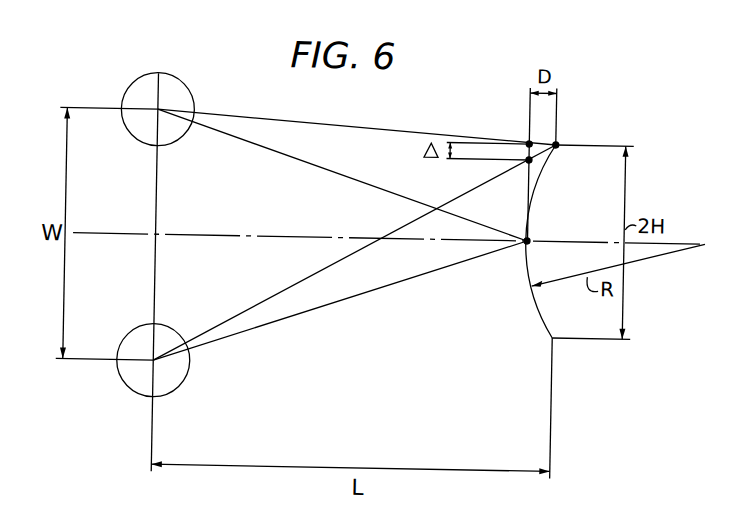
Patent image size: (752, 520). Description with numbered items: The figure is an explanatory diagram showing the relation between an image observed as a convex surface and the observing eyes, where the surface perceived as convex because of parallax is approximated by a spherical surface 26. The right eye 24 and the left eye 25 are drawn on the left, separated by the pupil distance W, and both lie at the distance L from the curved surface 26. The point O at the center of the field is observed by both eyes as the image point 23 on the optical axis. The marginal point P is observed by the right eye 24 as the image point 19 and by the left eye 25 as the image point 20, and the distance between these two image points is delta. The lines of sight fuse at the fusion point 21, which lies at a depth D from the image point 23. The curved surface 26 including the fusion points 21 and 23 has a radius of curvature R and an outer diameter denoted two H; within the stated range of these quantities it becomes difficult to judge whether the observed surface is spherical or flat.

The observed image point 19 is at (528, 160).
The observed image point 20 is at (528, 144).
The fusion point 21 is at (554, 144).
The image point 23 is at (527, 241).
The right eye 24 is at (143, 394).
The left eye 25 is at (142, 90).
The spherical surface 26 is at (536, 302).